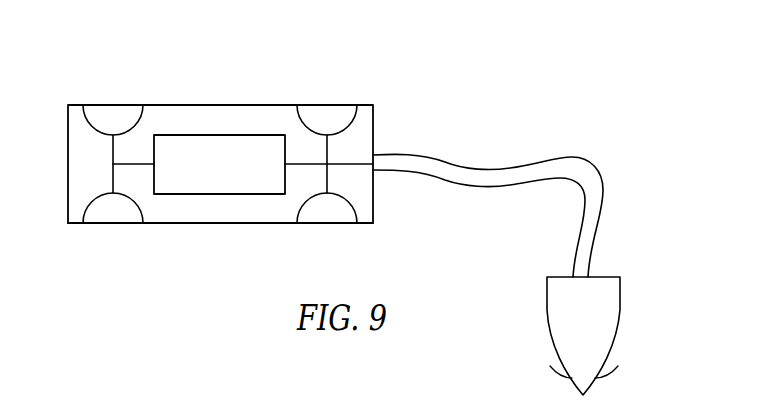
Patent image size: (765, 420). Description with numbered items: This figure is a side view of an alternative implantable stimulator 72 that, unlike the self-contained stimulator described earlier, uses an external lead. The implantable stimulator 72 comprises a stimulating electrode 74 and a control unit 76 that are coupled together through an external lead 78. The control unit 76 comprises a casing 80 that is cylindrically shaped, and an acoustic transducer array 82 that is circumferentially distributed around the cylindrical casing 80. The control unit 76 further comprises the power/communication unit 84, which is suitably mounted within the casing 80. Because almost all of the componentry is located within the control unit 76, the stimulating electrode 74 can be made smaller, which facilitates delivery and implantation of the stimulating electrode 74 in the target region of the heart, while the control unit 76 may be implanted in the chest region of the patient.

The implantable stimulator 72 is at (532, 132).
The stimulating electrode 74 is at (620, 313).
The control unit 76 is at (242, 99).
The external lead 78 is at (447, 157).
The casing 80 is at (187, 224).
The acoustic transducer array 82 is at (78, 204).
The power/communication unit 84 is at (173, 135).